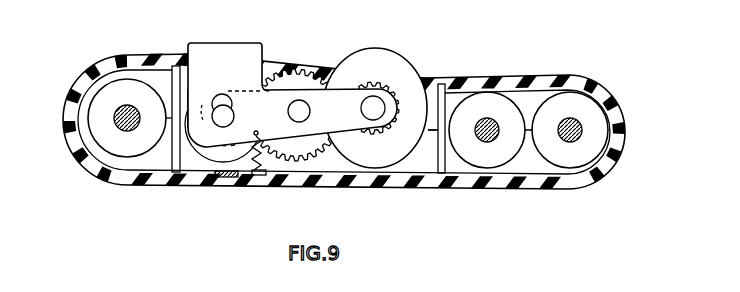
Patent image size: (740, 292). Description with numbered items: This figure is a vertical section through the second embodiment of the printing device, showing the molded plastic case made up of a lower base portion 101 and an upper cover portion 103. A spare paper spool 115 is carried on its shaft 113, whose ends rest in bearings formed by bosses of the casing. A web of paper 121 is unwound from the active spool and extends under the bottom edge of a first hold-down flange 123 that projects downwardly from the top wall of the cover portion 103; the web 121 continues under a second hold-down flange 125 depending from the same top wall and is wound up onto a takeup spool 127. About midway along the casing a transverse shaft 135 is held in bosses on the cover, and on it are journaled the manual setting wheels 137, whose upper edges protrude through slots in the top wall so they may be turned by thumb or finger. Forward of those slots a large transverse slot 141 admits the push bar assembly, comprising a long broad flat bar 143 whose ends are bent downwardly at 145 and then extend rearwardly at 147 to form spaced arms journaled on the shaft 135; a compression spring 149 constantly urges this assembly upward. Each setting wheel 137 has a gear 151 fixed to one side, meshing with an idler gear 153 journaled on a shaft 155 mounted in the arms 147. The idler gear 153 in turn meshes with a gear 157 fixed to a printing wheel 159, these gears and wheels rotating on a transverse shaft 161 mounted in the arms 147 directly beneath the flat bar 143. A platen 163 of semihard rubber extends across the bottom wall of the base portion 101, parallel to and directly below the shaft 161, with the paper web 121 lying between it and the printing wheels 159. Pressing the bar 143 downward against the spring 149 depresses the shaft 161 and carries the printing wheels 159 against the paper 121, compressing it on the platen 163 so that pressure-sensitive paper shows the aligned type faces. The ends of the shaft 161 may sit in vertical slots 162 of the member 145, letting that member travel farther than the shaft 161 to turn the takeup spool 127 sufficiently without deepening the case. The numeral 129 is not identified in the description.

The base portion 101 is at (521, 186).
The cover portion 103 is at (104, 68).
The shaft of spare paper spool 113 is at (582, 122).
The spare paper spool 115 is at (586, 170).
The web of paper 121 is at (422, 182).
The first hold-down flange 123 is at (447, 100).
The second hold-down flange 125 is at (168, 60).
The takeup spool 127 is at (102, 128).
The shaft 129 is at (115, 110).
The transverse shaft 135 is at (375, 88).
The manual setting wheel 137 is at (353, 60).
The transverse slot 141 is at (266, 61).
The push bar 143 is at (213, 40).
The downwardly bent end of push bar 145 is at (240, 53).
The arm of push bar assembly 147 is at (352, 150).
The compression spring 149 is at (266, 178).
The gear 151 is at (390, 84).
The idler gear 153 is at (313, 137).
The shaft 155 is at (287, 110).
The gear 157 is at (205, 157).
The printing wheel 159 is at (190, 145).
The transverse shaft 161 is at (213, 107).
The vertical slot 162 is at (219, 98).
The platen 163 is at (252, 178).